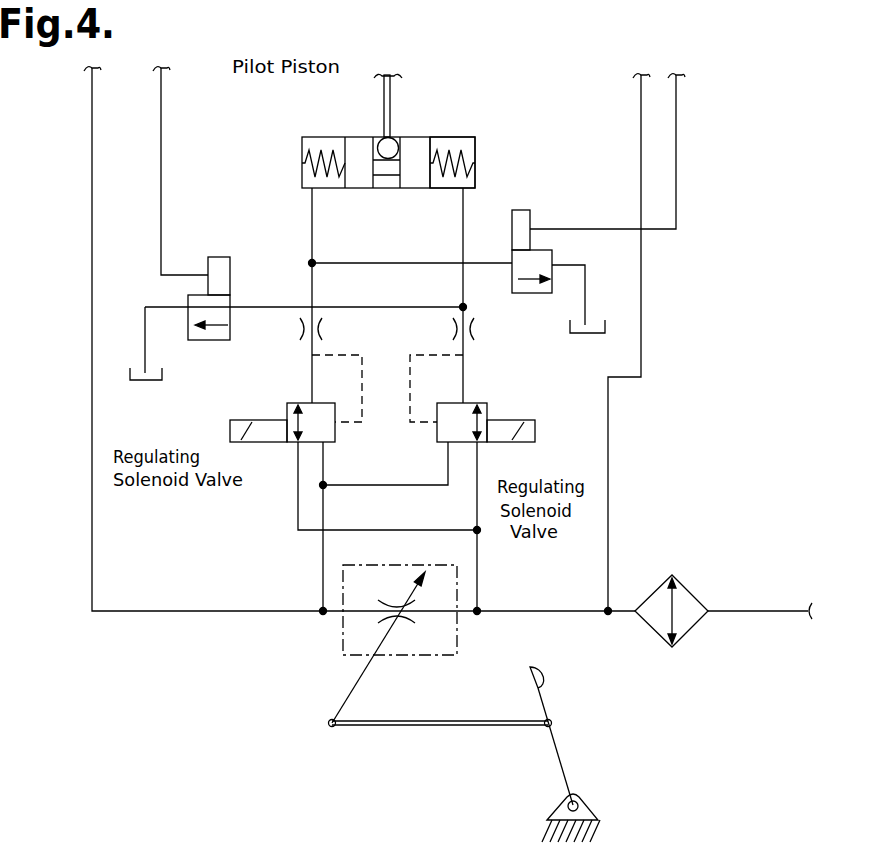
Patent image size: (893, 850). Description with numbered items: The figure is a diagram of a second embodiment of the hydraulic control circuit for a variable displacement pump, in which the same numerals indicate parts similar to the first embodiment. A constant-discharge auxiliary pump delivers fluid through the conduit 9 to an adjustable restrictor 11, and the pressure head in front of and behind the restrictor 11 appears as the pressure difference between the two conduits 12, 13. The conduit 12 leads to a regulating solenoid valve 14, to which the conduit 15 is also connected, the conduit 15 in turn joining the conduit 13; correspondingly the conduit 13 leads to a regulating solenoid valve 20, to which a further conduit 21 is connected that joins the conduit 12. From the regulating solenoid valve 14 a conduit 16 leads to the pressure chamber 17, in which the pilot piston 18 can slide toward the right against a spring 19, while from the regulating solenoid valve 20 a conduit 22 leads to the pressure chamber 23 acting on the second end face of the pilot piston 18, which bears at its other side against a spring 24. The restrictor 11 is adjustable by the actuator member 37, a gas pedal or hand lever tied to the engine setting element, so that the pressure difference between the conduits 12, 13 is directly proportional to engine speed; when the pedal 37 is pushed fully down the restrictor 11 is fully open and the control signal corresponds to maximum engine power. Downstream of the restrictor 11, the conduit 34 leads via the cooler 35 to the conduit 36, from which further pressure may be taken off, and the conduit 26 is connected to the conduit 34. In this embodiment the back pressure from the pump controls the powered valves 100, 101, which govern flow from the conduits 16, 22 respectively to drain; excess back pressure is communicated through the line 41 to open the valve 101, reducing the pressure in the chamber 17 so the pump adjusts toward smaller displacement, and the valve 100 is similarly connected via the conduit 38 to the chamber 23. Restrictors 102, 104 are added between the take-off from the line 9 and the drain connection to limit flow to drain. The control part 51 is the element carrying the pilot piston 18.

The conduit 9 is at (92, 163).
The conduit 38 is at (161, 163).
The conduit 26 is at (641, 163).
The line 41 is at (676, 163).
The pressure chamber 17 is at (313, 139).
The pressure chamber 23 is at (440, 140).
The spring 24 is at (302, 163).
The spring 19 is at (473, 163).
The pilot piston 18 is at (385, 140).
The control part 51 is at (390, 105).
The conduit 16 is at (312, 281).
The conduit 22 is at (463, 232).
The powered valve 100 is at (220, 257).
The powered valve 101 is at (520, 213).
The restrictor 102 is at (302, 330).
The restrictor 104 is at (474, 330).
The regulating solenoid valve 14 is at (287, 404).
The regulating solenoid valve 20 is at (487, 443).
The conduit 21 is at (395, 486).
The conduit 15 is at (413, 531).
The conduit 12 is at (323, 566).
The conduit 13 is at (477, 577).
The restrictor 11 is at (390, 603).
The conduit 34 is at (553, 613).
The cooler 35 is at (690, 592).
The conduit 36 is at (766, 612).
The actuator member 37 is at (546, 700).